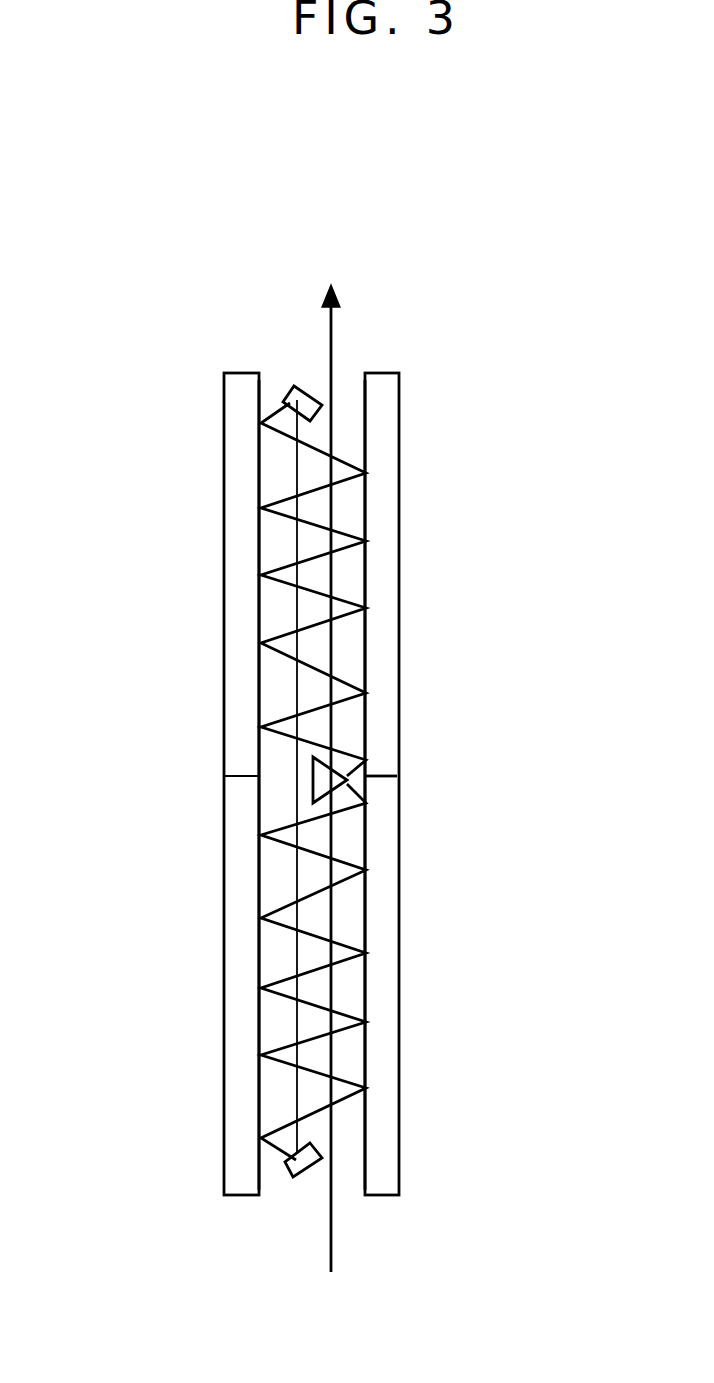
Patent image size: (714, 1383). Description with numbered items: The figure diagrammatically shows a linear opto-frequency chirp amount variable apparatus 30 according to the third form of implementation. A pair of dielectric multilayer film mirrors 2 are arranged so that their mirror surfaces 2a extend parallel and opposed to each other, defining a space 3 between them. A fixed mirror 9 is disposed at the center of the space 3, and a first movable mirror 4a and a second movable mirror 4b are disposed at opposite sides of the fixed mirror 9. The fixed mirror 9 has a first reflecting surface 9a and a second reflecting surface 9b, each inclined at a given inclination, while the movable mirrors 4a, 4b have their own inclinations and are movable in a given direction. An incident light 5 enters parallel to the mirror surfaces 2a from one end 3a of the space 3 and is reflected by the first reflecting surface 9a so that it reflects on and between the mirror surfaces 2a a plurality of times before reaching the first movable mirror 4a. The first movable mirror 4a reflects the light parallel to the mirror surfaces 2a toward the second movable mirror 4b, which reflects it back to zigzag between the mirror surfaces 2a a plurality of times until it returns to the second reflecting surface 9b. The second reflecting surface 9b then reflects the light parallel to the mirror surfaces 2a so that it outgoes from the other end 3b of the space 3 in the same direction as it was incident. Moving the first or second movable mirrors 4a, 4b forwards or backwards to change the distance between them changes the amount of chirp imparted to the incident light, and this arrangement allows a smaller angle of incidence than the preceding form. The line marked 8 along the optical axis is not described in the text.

The linear opto-frequency chirp amount variable apparatus 30 is at (610, 183).
The dielectric multilayer film mirror 2 is at (238, 480).
The mirror surface 2a is at (305, 785).
The space 3 is at (244, 780).
The one end of the space 3a is at (285, 1205).
The other end of the space 3b is at (292, 355).
The first movable mirror 4a is at (288, 1165).
The second movable mirror 4b is at (290, 396).
The incident light 5 is at (333, 1235).
The optical axis 8 is at (333, 328).
The fixed mirror 9 is at (441, 783).
The first reflecting surface 9a is at (335, 788).
The second reflecting surface 9b is at (335, 769).